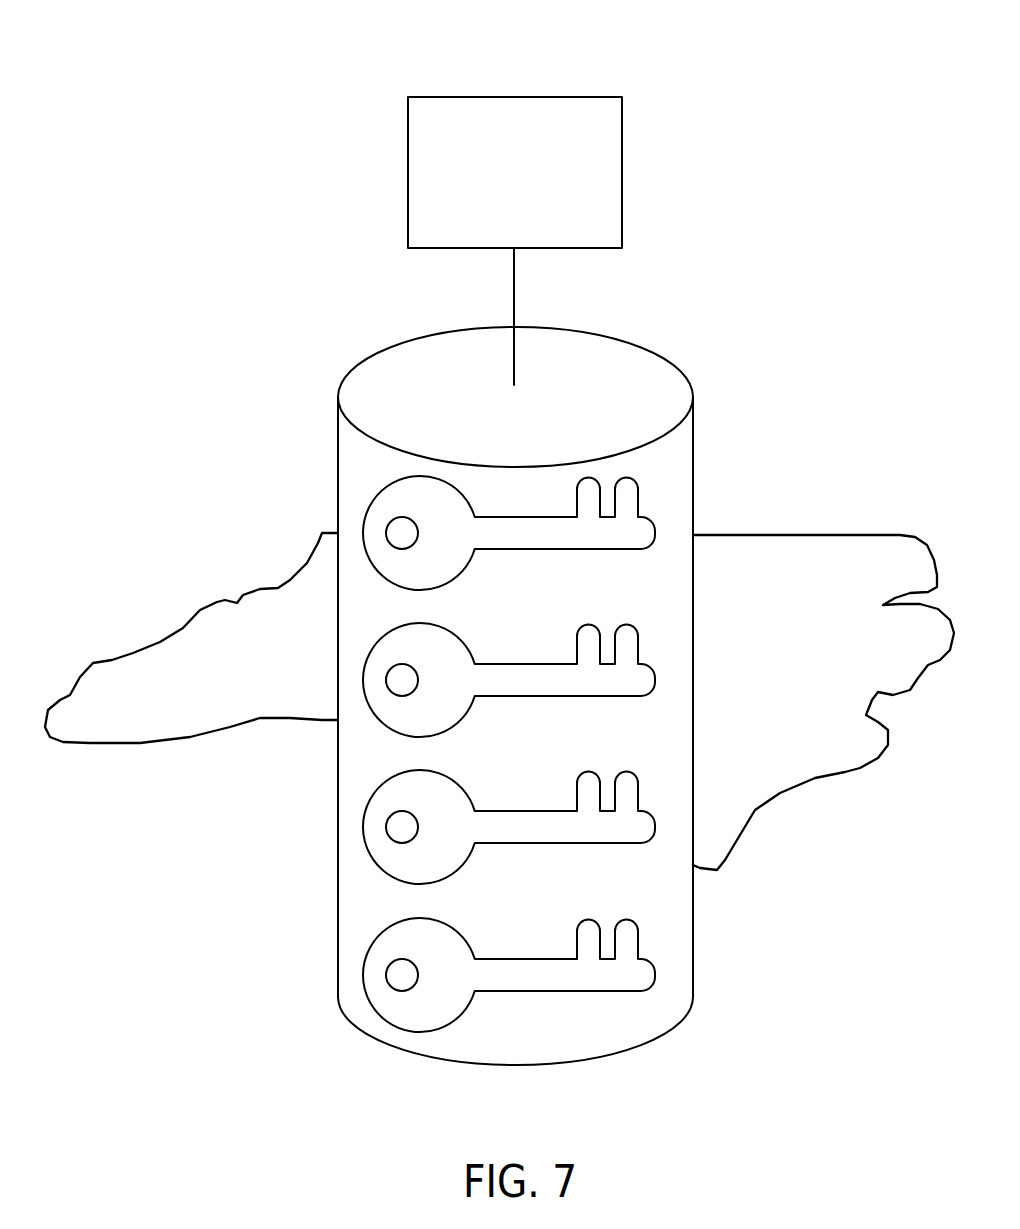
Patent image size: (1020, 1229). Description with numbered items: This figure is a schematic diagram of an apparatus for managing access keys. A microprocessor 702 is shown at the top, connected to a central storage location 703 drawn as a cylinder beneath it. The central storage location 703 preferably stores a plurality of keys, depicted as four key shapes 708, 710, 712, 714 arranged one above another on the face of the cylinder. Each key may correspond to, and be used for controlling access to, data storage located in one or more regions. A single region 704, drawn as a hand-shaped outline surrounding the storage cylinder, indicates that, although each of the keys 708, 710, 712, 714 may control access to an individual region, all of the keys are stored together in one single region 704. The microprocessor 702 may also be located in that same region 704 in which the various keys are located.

The microprocessor 702 is at (510, 97).
The central storage location 703 is at (693, 397).
The single region 704 is at (798, 535).
The first key 708 is at (655, 533).
The second key 710 is at (655, 680).
The third key 712 is at (655, 827).
The fourth key 714 is at (655, 977).